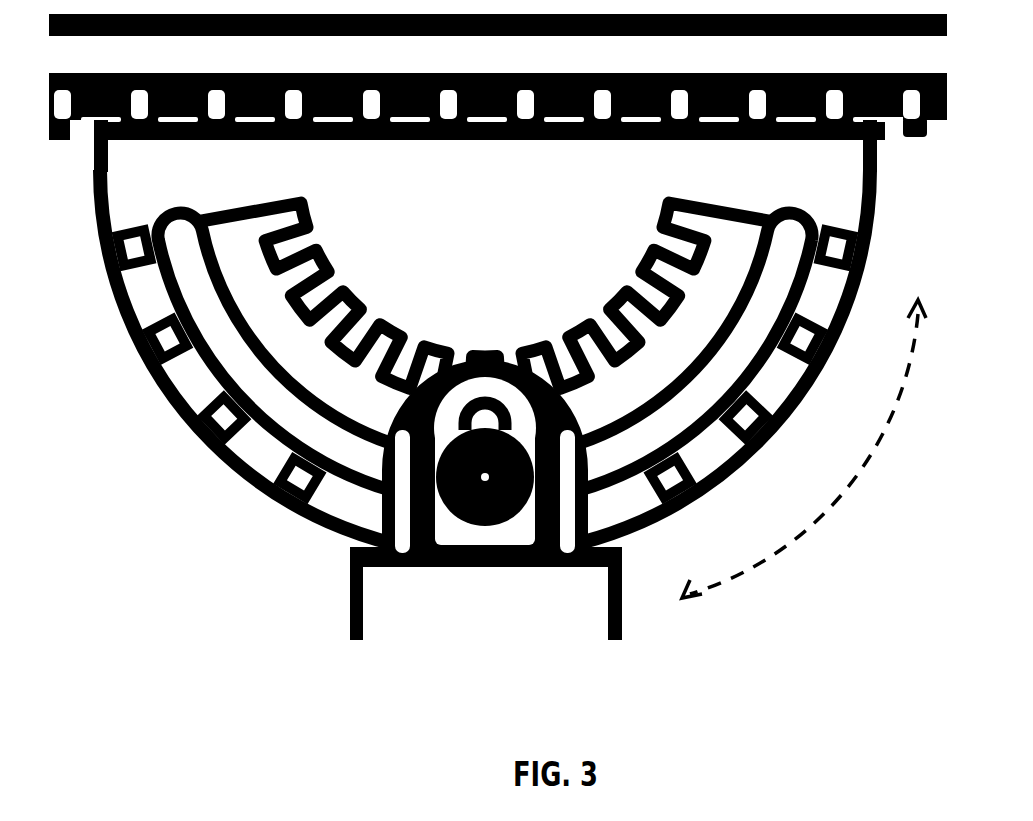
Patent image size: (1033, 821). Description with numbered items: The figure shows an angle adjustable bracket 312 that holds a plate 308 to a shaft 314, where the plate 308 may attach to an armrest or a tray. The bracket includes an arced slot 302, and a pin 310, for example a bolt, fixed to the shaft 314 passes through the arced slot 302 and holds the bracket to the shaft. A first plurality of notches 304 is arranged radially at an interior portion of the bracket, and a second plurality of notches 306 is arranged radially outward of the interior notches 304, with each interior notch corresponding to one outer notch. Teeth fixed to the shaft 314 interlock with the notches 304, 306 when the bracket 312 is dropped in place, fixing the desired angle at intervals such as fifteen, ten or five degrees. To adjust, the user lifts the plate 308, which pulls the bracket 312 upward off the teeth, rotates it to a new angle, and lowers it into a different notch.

The arced slot 302 is at (243, 409).
The first plurality of notches 304 is at (613, 375).
The second plurality of notches 306 is at (305, 490).
The plate 308 is at (546, 48).
The pin 310 is at (470, 522).
The angle adjustable bracket 312 is at (140, 198).
The shaft 314 is at (360, 618).